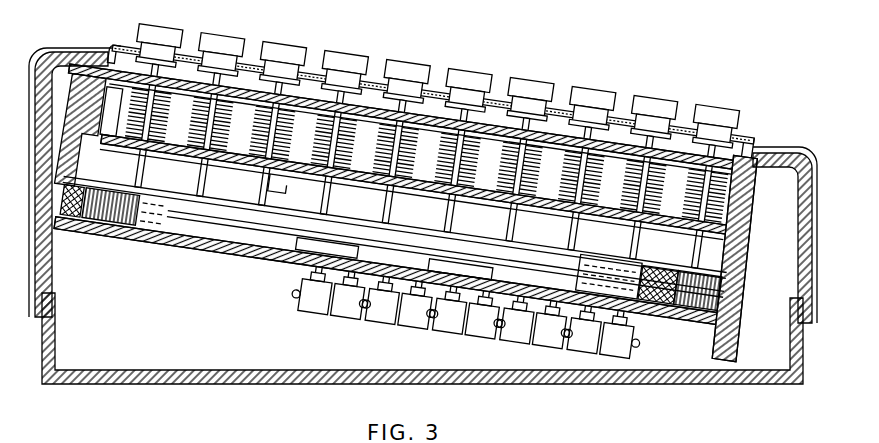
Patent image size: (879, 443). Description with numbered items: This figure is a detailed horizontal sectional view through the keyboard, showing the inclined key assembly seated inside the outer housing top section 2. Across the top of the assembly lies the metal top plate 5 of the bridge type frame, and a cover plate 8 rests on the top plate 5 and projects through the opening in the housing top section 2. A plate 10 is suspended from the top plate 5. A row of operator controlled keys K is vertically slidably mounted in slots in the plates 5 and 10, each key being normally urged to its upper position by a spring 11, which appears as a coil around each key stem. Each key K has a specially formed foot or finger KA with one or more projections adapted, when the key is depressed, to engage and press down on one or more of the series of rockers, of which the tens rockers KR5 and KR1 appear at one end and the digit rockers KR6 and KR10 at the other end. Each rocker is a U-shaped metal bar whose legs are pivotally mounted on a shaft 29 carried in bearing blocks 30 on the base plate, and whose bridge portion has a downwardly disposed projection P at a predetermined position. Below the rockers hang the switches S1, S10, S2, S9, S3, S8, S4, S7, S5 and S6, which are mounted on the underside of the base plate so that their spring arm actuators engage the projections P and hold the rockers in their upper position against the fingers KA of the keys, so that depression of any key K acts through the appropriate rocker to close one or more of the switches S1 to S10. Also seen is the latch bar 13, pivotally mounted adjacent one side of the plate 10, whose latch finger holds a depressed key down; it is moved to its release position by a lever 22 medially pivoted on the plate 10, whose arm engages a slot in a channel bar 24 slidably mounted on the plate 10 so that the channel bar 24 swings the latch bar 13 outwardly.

The outer housing top section 2 is at (787, 160).
The top plate 5 is at (123, 57).
The cover plate 8 is at (748, 141).
The plate 10 is at (690, 246).
The spring 11 is at (267, 100).
The latch bar 13 is at (279, 176).
The lever 22 is at (185, 231).
The channel bar 24 is at (236, 229).
The shaft 29 is at (220, 222).
The bearing blocks 30 is at (175, 216).
The keys K is at (280, 42).
The foot or finger KA is at (384, 213).
The rocker KR1 is at (100, 233).
The rocker KR5 is at (66, 238).
The rocker KR6 is at (653, 300).
The rocker KR10 is at (690, 305).
The projection P is at (310, 256).
The switch S1 is at (312, 289).
The switch S2 is at (379, 298).
The switch S3 is at (446, 308).
The switch S4 is at (514, 318).
The switch S5 is at (581, 328).
The switch S6 is at (622, 334).
The switch S7 is at (554, 324).
The switch S8 is at (487, 314).
The switch S9 is at (420, 304).
The switch S10 is at (352, 295).